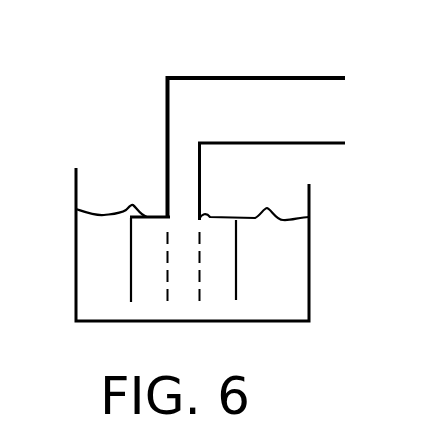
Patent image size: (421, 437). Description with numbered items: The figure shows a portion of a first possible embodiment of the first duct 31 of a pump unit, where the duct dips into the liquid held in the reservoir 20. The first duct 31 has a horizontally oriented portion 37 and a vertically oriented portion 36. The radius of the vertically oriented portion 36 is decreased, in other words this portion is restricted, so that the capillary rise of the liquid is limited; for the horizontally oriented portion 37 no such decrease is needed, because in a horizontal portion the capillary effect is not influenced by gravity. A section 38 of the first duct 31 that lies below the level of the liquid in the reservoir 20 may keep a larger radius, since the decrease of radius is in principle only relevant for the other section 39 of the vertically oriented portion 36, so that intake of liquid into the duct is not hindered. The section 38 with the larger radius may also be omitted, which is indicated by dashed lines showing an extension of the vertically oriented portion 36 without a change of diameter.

The reservoir 20 is at (295, 260).
The first duct 31 is at (260, 100).
The horizontally oriented portion 37 is at (310, 98).
The other section of the vertically oriented portion 39 is at (178, 150).
The vertically oriented portion 36 is at (179, 203).
The section below liquid level 38 is at (140, 267).